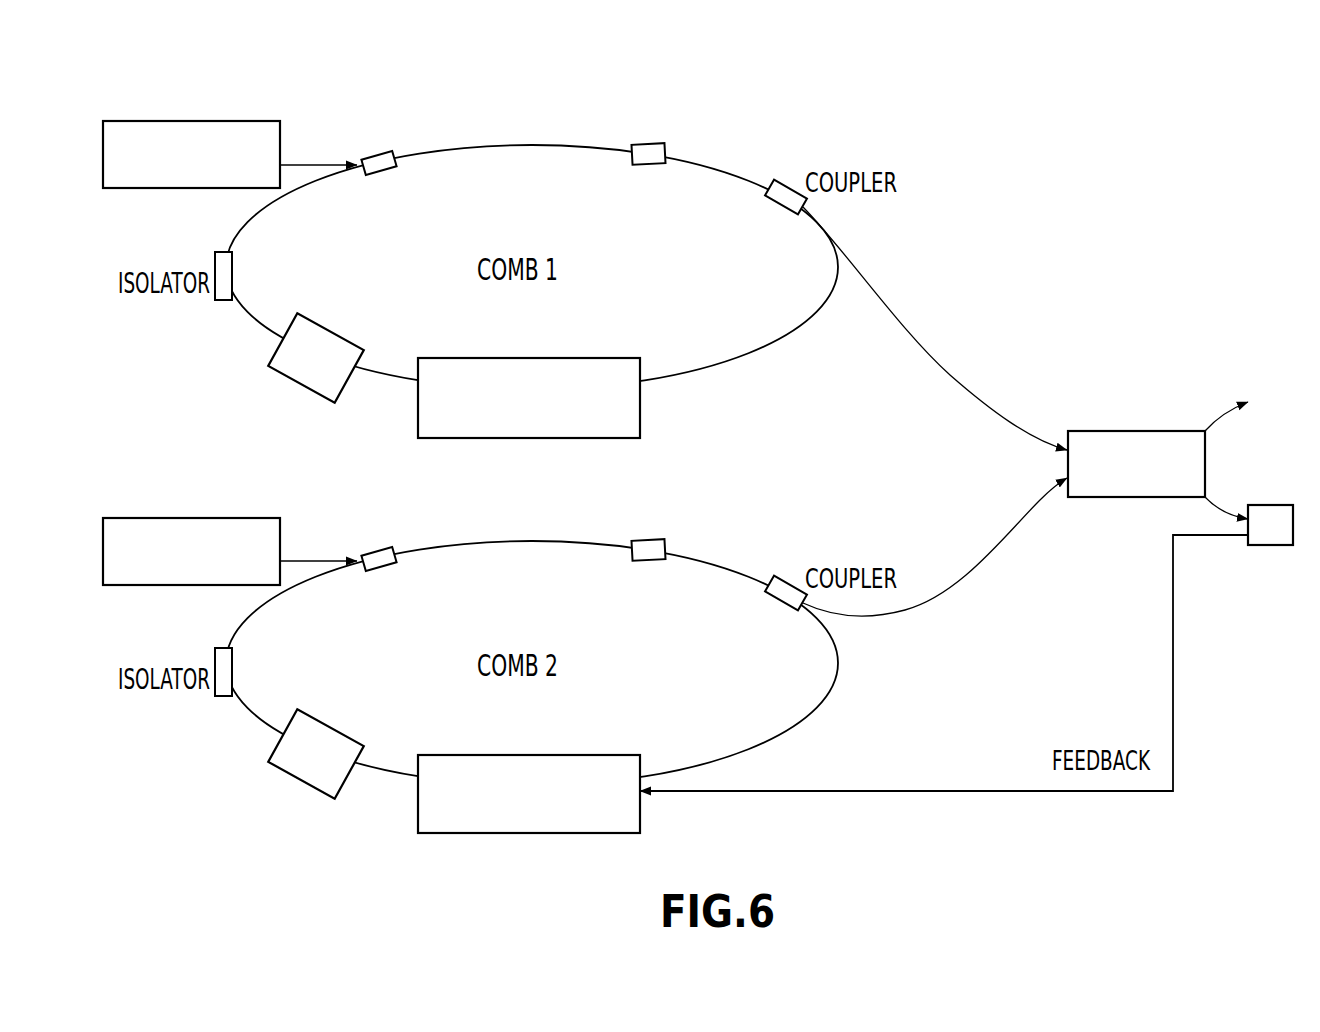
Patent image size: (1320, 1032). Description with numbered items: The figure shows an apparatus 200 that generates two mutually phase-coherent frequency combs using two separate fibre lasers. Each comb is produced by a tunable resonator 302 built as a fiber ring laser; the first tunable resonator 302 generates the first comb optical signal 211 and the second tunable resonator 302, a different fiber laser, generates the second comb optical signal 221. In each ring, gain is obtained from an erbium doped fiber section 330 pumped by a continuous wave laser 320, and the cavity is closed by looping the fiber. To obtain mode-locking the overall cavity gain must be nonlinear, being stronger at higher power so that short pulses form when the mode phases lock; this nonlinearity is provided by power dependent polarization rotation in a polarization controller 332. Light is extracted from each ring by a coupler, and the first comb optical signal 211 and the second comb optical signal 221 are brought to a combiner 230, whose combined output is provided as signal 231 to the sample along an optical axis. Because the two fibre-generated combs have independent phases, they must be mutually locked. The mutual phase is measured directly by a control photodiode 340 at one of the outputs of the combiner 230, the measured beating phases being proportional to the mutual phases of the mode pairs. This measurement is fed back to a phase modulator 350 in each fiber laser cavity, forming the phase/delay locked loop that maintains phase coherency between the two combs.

The apparatus 200 is at (978, 65).
The tunable resonator 302 is at (453, 112).
The continuous wave laser 320 is at (158, 121).
The erbium doped fiber section 330 is at (548, 138).
The polarization controller 332 is at (300, 385).
The phase modulator 350 is at (640, 408).
The first comb optical signal 211 is at (912, 333).
The second comb optical signal 221 is at (945, 585).
The combiner 230 is at (1122, 430).
The signal 231 is at (1247, 402).
The control photodiode 340 is at (1272, 546).